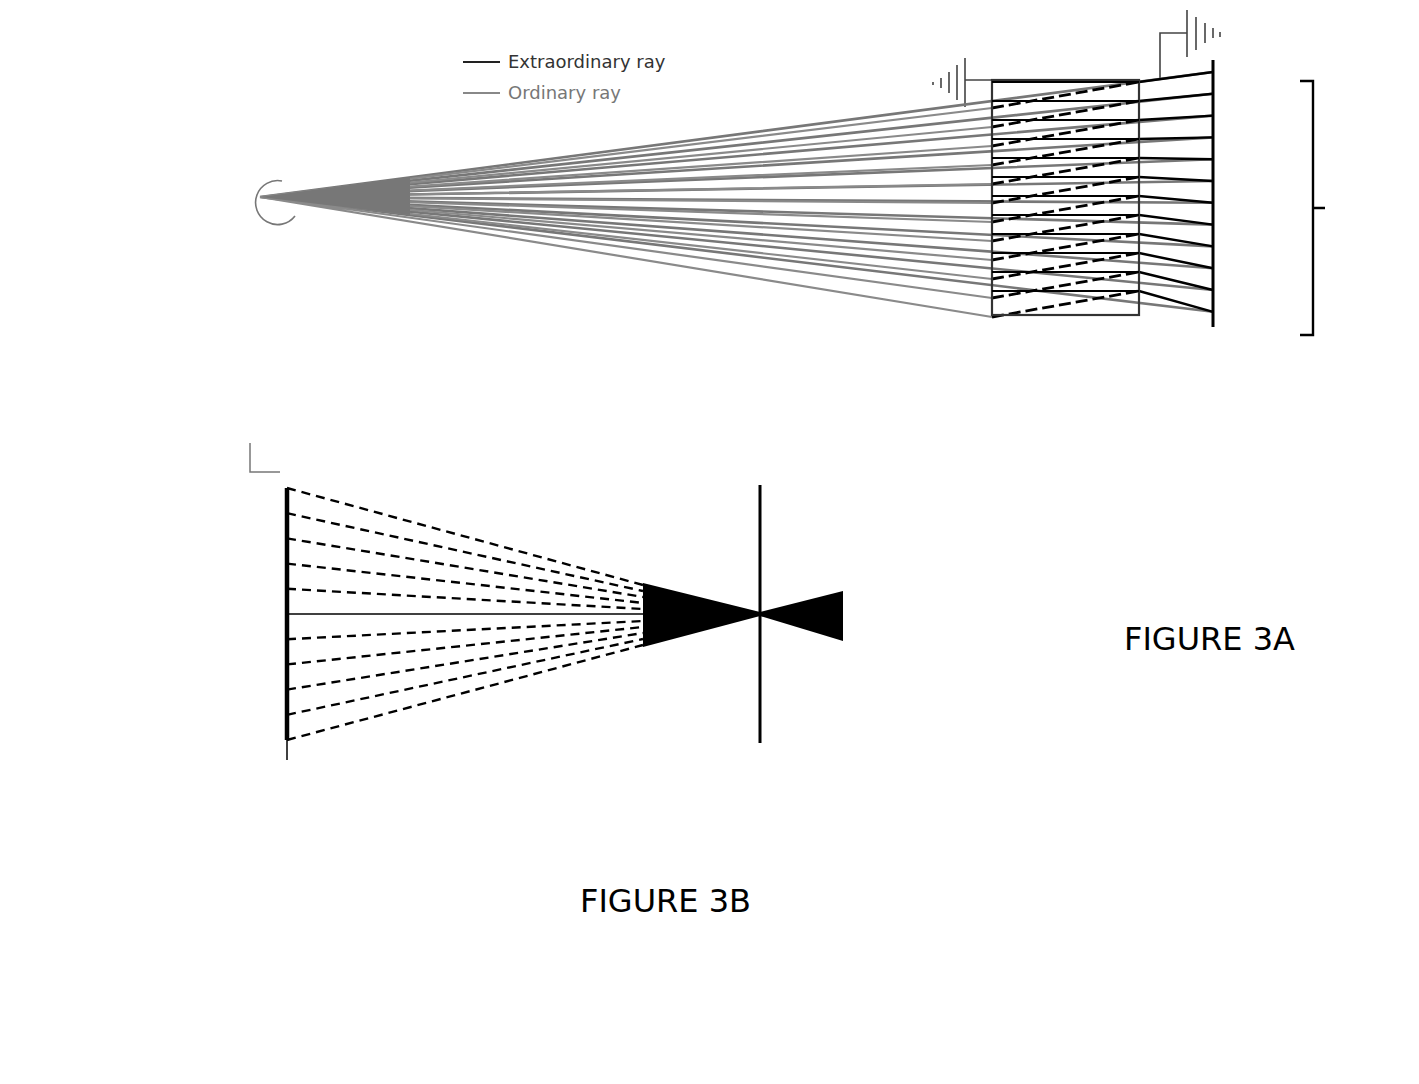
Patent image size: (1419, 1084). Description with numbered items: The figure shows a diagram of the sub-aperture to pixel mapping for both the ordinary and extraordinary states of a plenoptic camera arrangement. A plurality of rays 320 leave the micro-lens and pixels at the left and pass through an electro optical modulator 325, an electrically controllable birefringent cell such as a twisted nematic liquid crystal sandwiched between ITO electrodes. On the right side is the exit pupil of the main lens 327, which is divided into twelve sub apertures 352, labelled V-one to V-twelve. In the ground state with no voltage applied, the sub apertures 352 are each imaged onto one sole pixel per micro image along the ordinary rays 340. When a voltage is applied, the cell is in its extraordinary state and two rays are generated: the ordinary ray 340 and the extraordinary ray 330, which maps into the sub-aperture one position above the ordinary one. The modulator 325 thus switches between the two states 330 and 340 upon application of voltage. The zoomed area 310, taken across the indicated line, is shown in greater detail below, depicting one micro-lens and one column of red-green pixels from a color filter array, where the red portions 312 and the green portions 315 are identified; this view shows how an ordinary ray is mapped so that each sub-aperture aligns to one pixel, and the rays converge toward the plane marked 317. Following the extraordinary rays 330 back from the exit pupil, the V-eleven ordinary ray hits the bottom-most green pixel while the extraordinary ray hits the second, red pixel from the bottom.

In FIG. 3A, the zoomed area 310 is at (540, 460).
In FIG. 3B, the red portions 312 is at (277, 725).
In FIG. 3B, the green portions 315 is at (640, 650).
In FIG. 3B, the main lens aperture plane 317 is at (782, 637).
In FIG. 3A, the rays 320 is at (408, 207).
In FIG. 3A, the electro optical modulator 325 is at (1051, 333).
In FIG. 3A, the exit pupil of the main lens 327 is at (1163, 318).
In FIG. 3A, the extraordinary rays 330 is at (1062, 90).
In FIG. 3A, the ordinary rays 340 is at (993, 127).
In FIG. 3A, the sub apertures 352 is at (1309, 199).